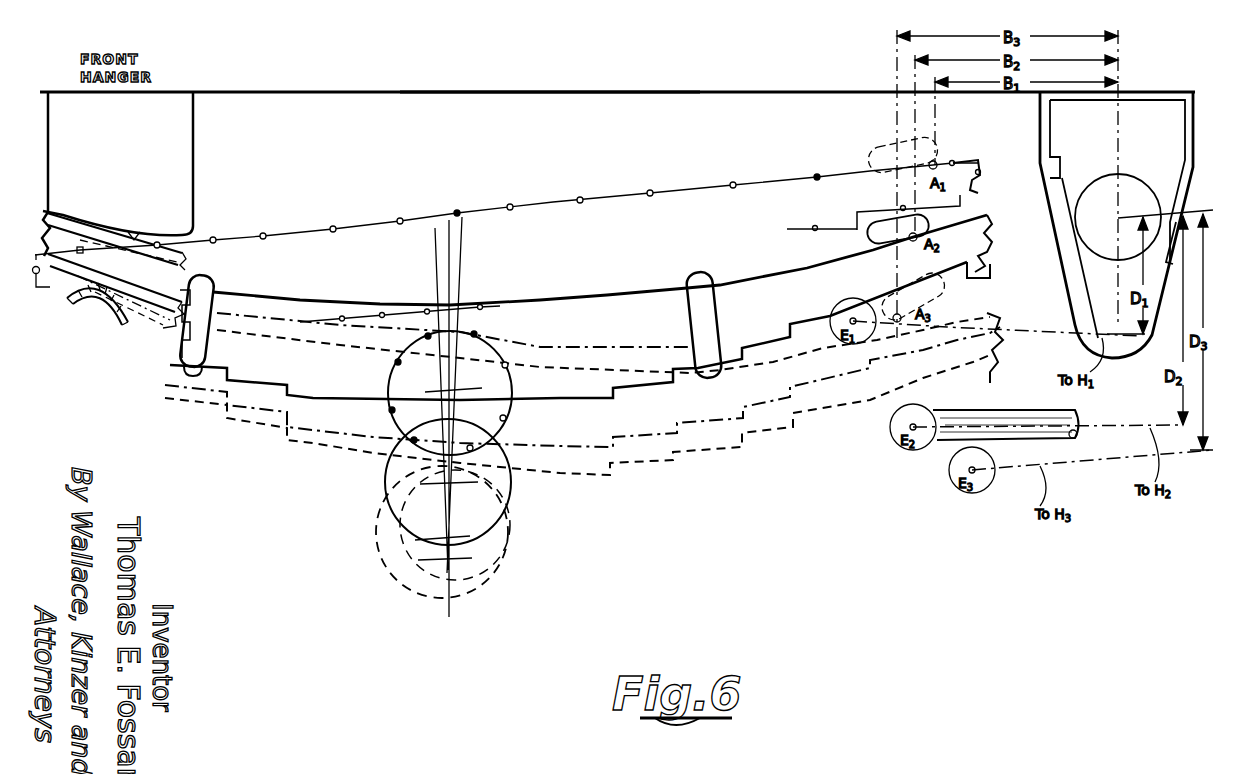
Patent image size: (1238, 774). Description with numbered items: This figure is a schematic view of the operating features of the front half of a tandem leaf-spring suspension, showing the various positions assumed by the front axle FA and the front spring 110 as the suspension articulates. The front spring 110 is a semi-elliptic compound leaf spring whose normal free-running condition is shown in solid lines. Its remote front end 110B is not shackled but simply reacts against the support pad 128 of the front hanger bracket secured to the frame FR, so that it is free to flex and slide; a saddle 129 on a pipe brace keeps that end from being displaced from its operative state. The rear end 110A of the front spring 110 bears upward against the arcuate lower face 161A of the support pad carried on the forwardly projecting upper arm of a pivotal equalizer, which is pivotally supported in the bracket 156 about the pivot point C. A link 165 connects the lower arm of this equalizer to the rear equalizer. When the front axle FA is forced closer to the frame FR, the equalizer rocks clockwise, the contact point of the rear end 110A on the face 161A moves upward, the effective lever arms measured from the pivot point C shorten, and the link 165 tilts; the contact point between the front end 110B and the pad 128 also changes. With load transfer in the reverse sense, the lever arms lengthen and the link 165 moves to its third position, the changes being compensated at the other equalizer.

The front spring 110 is at (682, 190).
The rear end of the front spring 110A is at (972, 162).
The front end of the front spring 110B is at (50, 200).
The support pad 128 is at (133, 233).
The saddle 129 is at (97, 300).
The bracket 156 is at (1165, 138).
The arcuate lower face of the support pad 161A is at (872, 150).
The link 165 is at (990, 417).
The frame FR is at (541, 92).
The front axle FA is at (480, 336).
The pivot point of the front equalizer C is at (1116, 218).